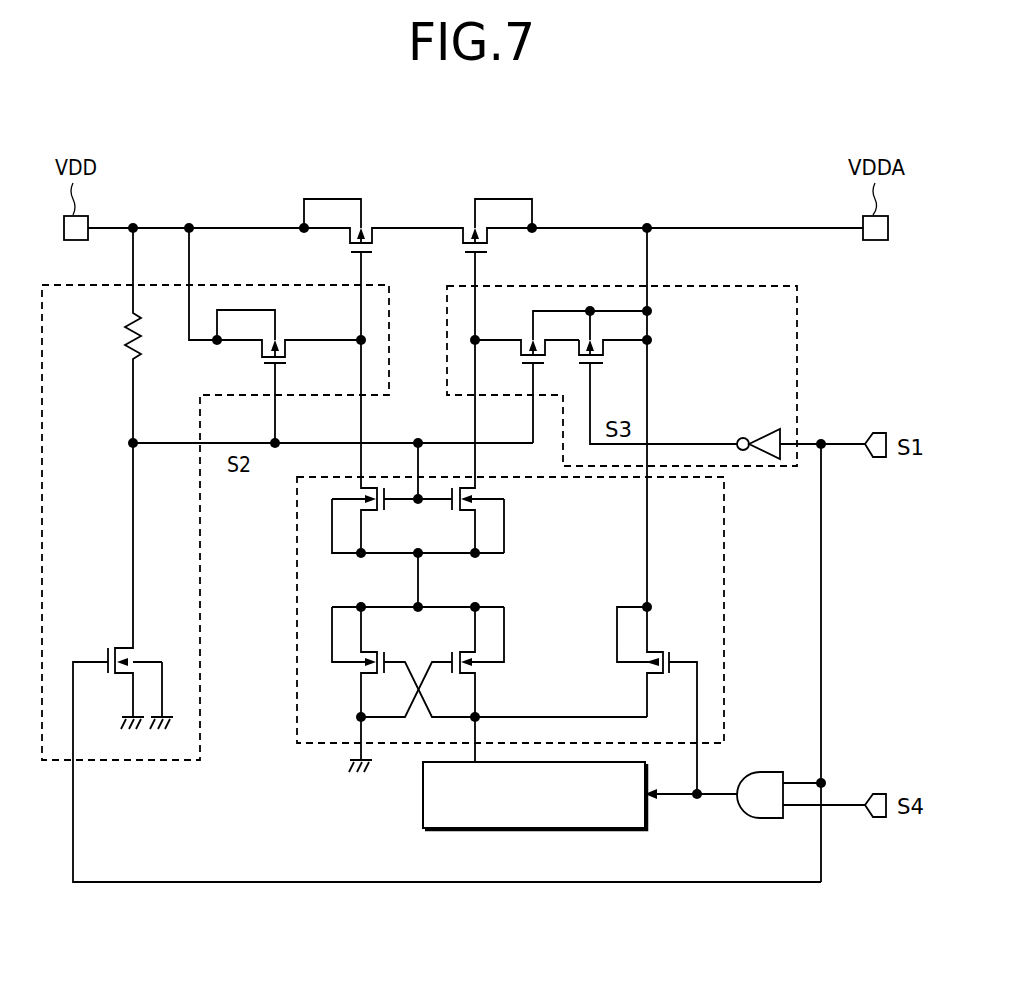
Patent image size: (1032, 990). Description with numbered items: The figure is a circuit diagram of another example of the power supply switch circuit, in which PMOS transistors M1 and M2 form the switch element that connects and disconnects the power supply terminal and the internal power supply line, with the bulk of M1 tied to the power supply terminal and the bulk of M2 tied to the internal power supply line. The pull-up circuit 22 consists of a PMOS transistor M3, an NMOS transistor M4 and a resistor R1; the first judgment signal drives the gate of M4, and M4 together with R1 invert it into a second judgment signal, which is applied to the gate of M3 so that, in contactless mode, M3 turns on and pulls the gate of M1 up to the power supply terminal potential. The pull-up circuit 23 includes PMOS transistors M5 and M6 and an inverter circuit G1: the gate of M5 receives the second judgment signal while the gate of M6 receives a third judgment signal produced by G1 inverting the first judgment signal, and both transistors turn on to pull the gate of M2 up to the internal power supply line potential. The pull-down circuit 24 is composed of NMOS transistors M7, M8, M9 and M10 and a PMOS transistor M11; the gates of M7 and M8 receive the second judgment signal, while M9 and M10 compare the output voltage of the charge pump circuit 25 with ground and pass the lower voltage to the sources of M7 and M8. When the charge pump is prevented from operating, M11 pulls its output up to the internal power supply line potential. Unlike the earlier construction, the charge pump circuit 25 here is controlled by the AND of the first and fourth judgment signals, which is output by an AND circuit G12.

The pull-up circuit 22 is at (248, 285).
The pull-up circuit 23 is at (592, 286).
The pull-down circuit 24 is at (330, 744).
The charge pump circuit 25 is at (610, 829).
The resistor R1 is at (118, 335).
The PMOS transistor M1 is at (338, 269).
The PMOS transistor M2 is at (498, 269).
The PMOS transistor M3 is at (277, 335).
The NMOS transistor M4 is at (447, 662).
The PMOS transistor M5 is at (530, 377).
The PMOS transistor M6 is at (658, 375).
The NMOS transistor M7 is at (418, 449).
The NMOS transistor M8 is at (470, 449).
The NMOS transistor M9 is at (403, 689).
The NMOS transistor M10 is at (504, 684).
The PMOS transistor M11 is at (637, 513).
The inverter circuit G1 is at (801, 641).
The AND circuit G12 is at (762, 818).